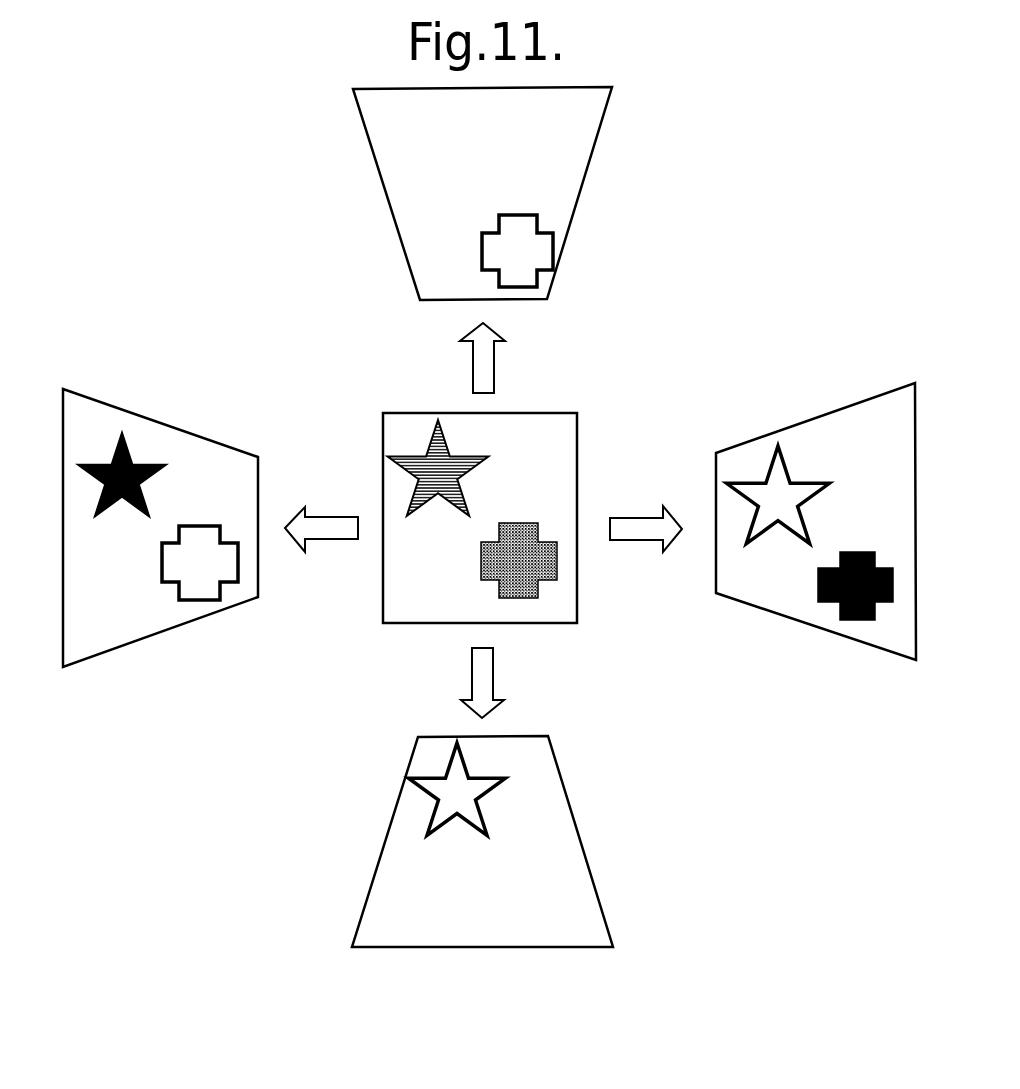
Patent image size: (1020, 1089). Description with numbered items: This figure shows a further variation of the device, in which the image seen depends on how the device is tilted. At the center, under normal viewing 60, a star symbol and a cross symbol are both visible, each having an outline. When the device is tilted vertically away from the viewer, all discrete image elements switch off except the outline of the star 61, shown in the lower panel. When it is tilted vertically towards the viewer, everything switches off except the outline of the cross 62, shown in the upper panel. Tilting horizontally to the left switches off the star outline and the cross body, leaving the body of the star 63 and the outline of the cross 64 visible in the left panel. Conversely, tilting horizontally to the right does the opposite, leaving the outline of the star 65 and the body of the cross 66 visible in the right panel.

The normal viewing 60 is at (538, 623).
The outline of the star 61 is at (433, 812).
The outline of the cross 62 is at (545, 249).
The body of the star 63 is at (124, 447).
The outline of the cross 64 is at (196, 588).
The outline of the star 65 is at (818, 482).
The body of the cross 66 is at (860, 620).